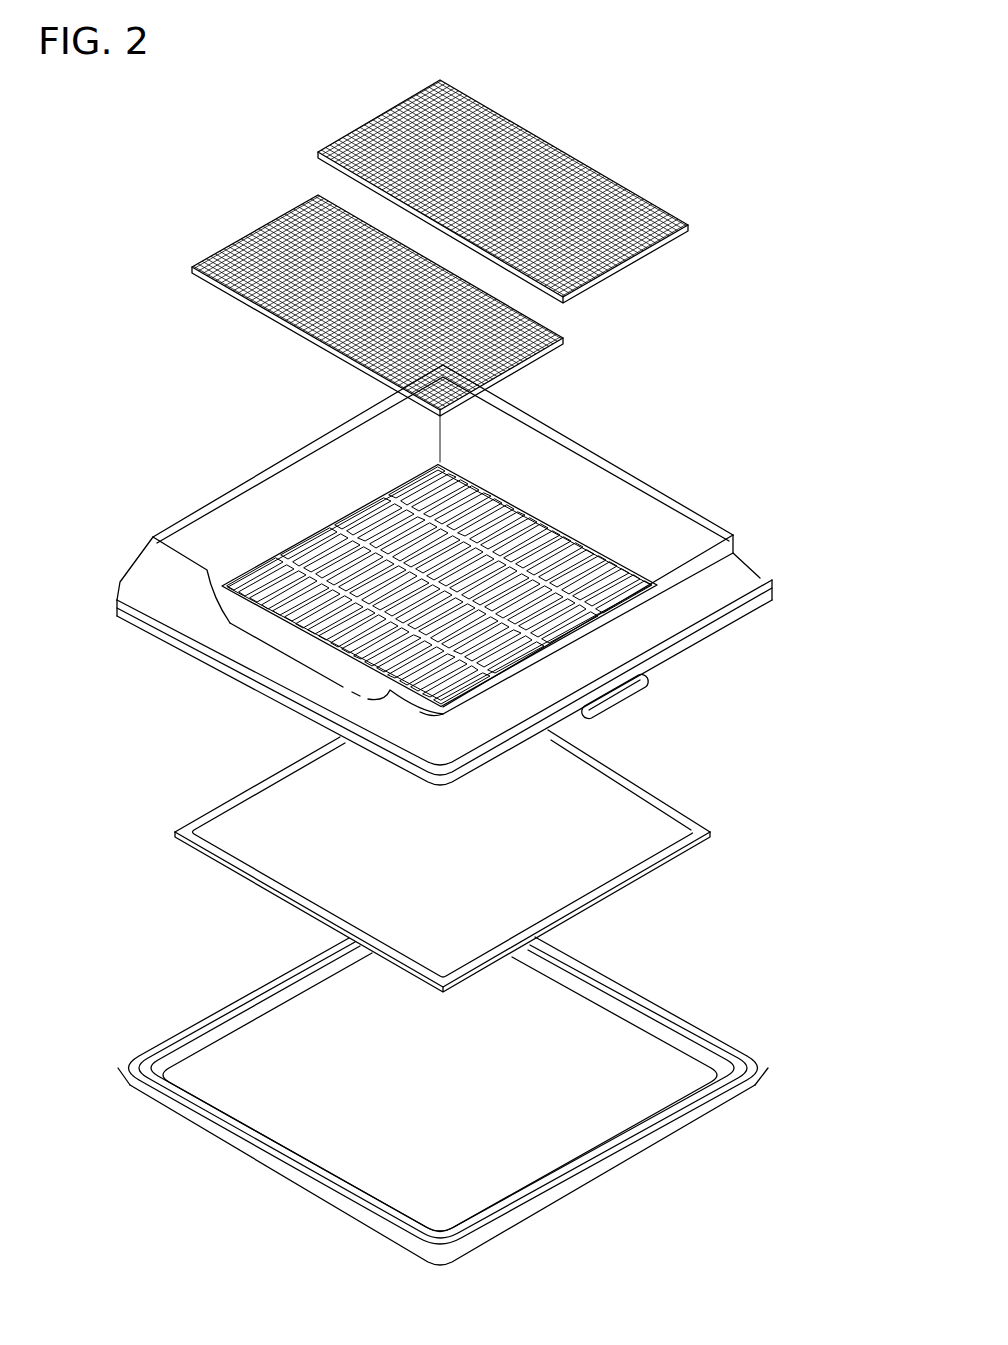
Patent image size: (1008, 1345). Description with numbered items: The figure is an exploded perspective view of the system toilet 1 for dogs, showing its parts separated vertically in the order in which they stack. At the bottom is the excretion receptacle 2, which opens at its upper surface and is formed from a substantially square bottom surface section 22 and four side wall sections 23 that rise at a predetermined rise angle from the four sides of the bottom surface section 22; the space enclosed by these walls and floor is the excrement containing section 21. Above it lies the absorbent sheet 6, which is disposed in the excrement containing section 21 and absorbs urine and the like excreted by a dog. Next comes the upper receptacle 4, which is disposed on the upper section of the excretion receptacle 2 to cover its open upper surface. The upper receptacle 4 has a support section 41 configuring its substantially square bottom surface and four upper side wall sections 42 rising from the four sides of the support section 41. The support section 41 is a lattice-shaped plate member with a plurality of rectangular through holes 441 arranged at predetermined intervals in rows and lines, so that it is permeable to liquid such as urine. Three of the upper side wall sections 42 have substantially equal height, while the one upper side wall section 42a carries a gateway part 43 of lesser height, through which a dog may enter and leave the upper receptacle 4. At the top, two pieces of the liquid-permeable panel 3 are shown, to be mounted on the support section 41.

The system toilet for dogs 1 is at (605, 86).
The excretion receptacle 2 is at (443, 1101).
The liquid-permeable panel 3 is at (602, 192).
The upper receptacle 4 is at (592, 440).
The absorbent sheet 6 is at (645, 808).
The excrement containing section 21 is at (263, 1123).
The bottom surface section 22 is at (440, 1078).
The side wall sections 23 is at (190, 1117).
The support section 41 is at (454, 560).
The upper side wall sections 42 is at (657, 545).
The upper side wall section 42a is at (157, 588).
The gateway part 43 is at (282, 647).
The through holes 441 is at (305, 547).